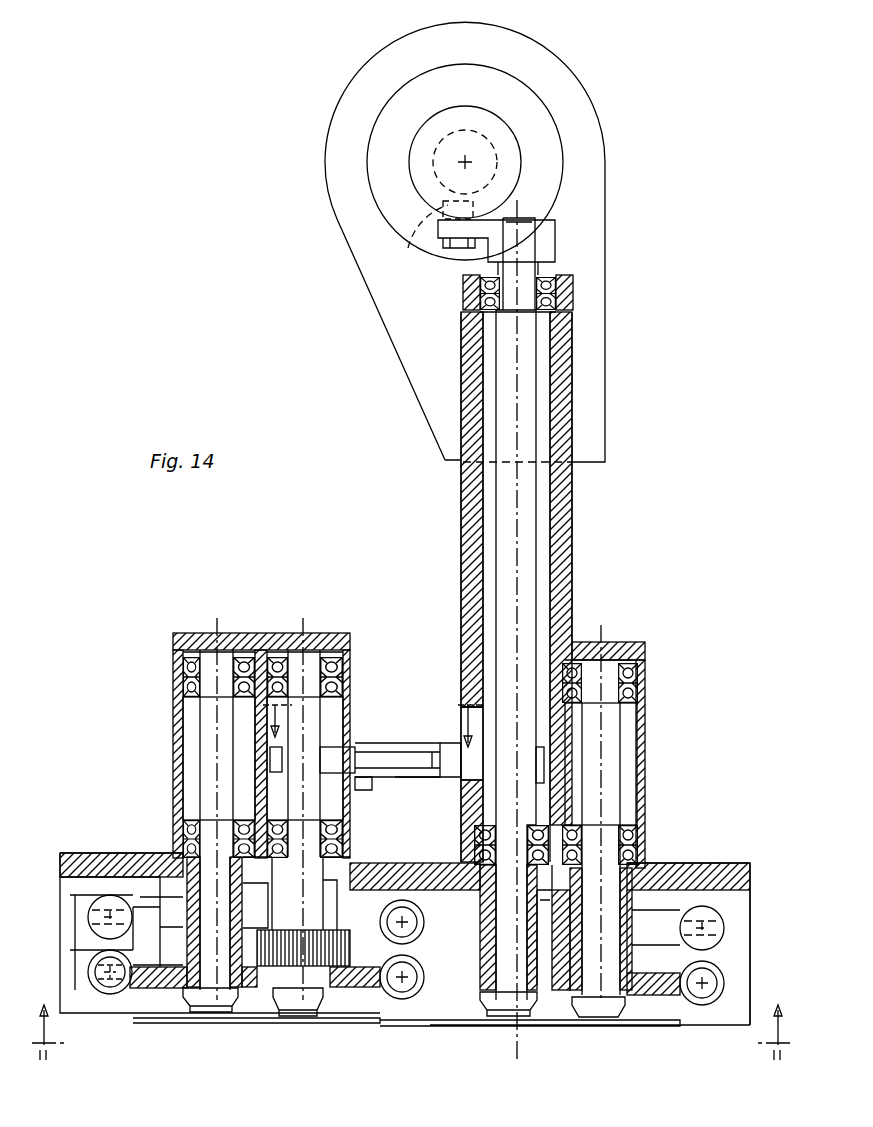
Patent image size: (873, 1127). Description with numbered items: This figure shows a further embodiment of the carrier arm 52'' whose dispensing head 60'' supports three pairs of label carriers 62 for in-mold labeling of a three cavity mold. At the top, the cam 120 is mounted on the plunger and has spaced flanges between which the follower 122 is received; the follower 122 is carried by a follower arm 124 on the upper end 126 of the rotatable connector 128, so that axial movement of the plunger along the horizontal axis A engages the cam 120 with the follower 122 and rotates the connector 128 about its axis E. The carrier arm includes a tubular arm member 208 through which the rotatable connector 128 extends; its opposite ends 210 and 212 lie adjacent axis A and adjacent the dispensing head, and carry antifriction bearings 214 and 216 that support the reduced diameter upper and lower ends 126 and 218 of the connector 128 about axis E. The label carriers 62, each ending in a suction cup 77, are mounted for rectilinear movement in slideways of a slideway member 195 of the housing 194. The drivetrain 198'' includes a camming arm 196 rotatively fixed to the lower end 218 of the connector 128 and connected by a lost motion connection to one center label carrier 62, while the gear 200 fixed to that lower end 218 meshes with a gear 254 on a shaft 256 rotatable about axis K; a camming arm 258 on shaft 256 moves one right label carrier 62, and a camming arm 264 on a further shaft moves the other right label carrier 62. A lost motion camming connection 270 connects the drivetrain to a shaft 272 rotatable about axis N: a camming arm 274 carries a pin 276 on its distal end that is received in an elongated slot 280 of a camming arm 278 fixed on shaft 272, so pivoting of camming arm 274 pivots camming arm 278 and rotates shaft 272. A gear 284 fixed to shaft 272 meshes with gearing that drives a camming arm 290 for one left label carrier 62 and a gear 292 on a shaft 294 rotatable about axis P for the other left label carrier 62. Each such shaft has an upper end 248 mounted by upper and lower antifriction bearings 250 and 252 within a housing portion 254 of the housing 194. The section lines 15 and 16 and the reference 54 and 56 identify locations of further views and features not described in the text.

The cam 120 is at (535, 167).
The horizontal pivotal axis A is at (468, 160).
The follower 122 is at (421, 234).
The follower arm 124 is at (487, 230).
The upper end of rotatable connector 126 is at (530, 259).
The antifriction bearing 214 is at (575, 295).
The tube bore 54 is at (575, 319).
The upper end of tubular arm member 210 is at (578, 345).
The tubular arm member 208 is at (470, 526).
The axis E is at (516, 522).
The rotatable connector 128 is at (546, 592).
The carrier arm 52'' is at (608, 477).
The tube opening 56 is at (470, 705).
The gear 254 is at (350, 639).
The upper antifriction bearing 250 is at (264, 633).
The axis N is at (306, 627).
The axis P is at (212, 739).
The upper end of shaft 248 is at (205, 717).
The axis K is at (603, 715).
The lower antifriction bearing 252 is at (185, 851).
The section line 16 is at (372, 737).
The camming arm 278 is at (355, 749).
The camming arm 274 is at (438, 744).
The lost motion camming connection 270 is at (418, 739).
The elongated slot 280 is at (385, 779).
The pin 276 is at (405, 777).
The lower end of tubular arm member 212 is at (465, 814).
The camming arm 196 is at (428, 879).
The antifriction bearing 216 is at (470, 839).
The housing 194 is at (70, 851).
The camming arm 290 is at (142, 887).
The slideway member 195 is at (68, 905).
The label carrier 62 is at (88, 971).
The suction cup 77 is at (105, 1000).
The section line 15 is at (409, 1019).
The gear 292 is at (175, 1000).
The shaft 294 is at (200, 1010).
The gear 284 is at (285, 1005).
The shaft 272 is at (340, 1000).
The lower end of rotatable connector 218 is at (478, 1010).
The gear 200 is at (555, 1010).
The shaft 256 is at (620, 1010).
The camming arm 258 is at (660, 1000).
The camming arm 264 is at (655, 904).
The drivetrain 198'' is at (710, 922).
The dispensing head 60'' is at (699, 841).